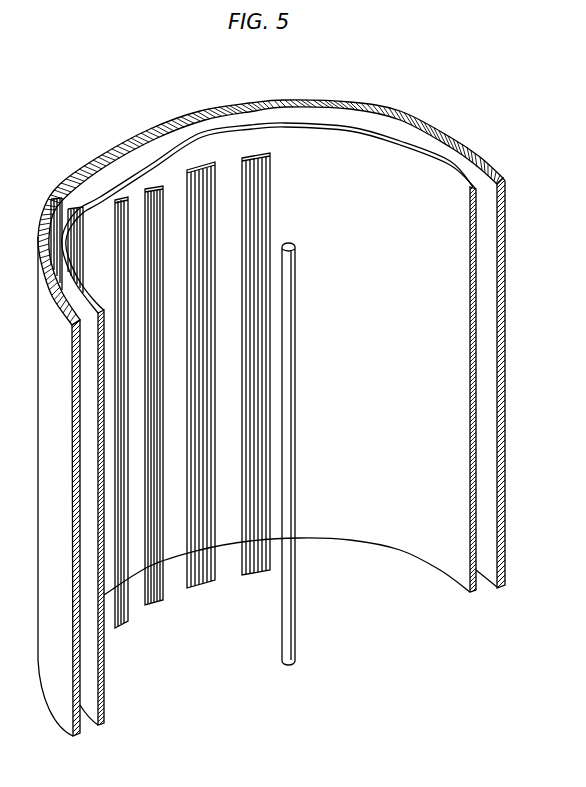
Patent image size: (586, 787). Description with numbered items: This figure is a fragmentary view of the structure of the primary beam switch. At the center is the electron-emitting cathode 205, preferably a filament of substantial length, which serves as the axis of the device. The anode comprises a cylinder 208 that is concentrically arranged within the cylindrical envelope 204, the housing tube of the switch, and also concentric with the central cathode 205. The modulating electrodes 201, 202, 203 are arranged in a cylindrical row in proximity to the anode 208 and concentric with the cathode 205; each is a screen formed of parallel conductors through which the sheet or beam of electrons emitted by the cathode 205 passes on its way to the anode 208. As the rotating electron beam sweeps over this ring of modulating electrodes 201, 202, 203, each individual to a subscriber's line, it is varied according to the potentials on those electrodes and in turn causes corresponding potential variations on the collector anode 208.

The modulating electrode 201 is at (124, 626).
The modulating electrode 202 is at (155, 605).
The modulating electrode 203 is at (200, 590).
The cylindrical envelope 204 is at (67, 178).
The cathode 205 is at (297, 621).
The anode 208 is at (470, 287).